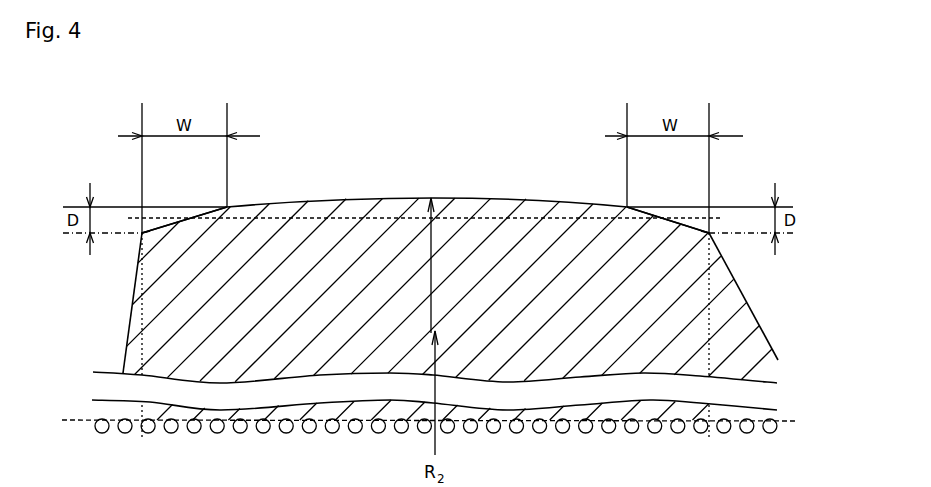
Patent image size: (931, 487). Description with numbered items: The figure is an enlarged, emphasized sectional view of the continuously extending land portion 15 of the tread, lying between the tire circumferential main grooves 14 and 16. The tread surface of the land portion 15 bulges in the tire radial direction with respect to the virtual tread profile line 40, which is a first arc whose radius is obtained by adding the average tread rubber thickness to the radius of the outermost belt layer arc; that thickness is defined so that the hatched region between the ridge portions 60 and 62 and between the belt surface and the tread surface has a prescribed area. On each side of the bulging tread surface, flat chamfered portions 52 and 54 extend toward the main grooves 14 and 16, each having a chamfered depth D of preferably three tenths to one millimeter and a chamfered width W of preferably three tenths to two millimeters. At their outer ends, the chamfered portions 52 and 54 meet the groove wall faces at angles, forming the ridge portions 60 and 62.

The tire circumferential main groove 14 is at (117, 253).
The continuously extending land portion 15 is at (498, 191).
The tire circumferential main groove 16 is at (749, 266).
The virtual tread profile line 40 is at (715, 212).
The chamfered portion 52 is at (168, 227).
The chamfered portion 54 is at (672, 219).
The ridge portion 60 is at (144, 234).
The ridge portion 62 is at (706, 235).